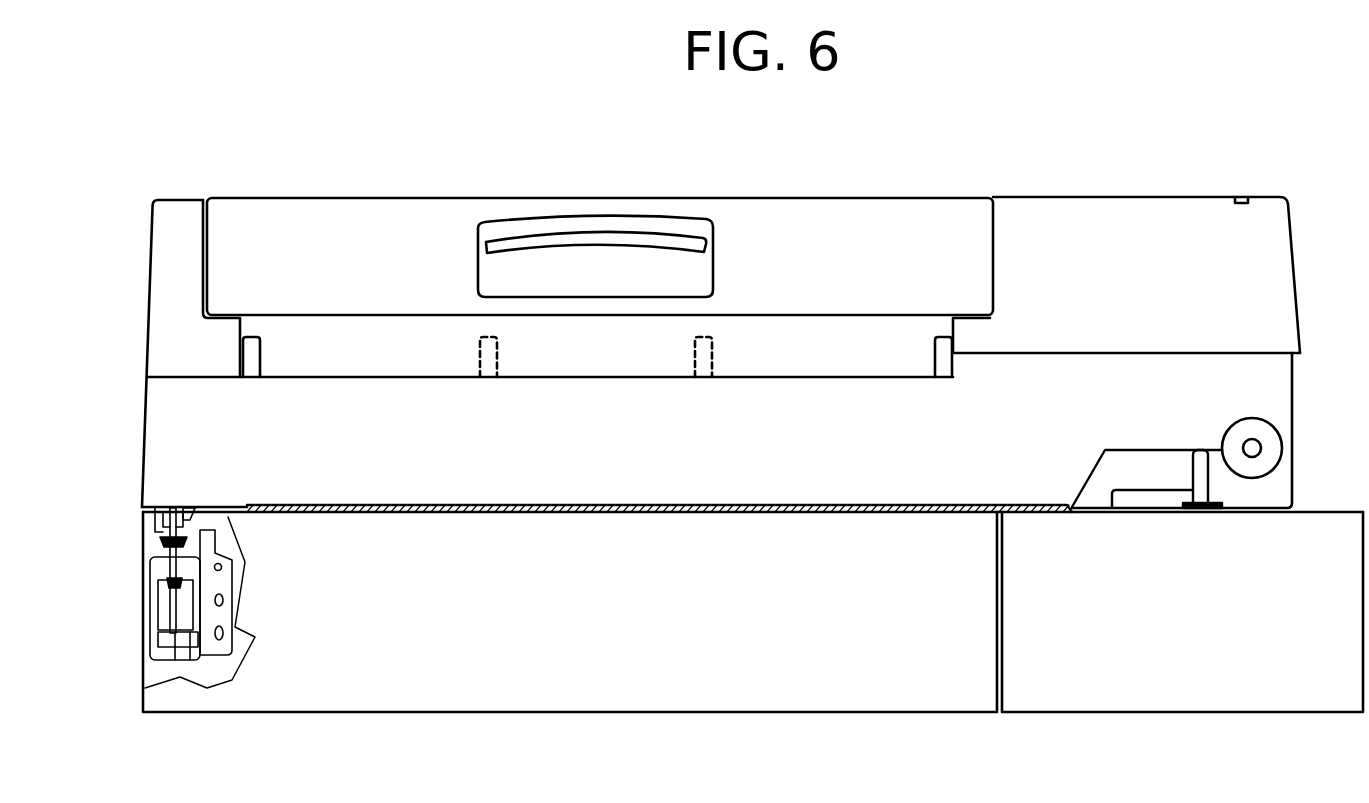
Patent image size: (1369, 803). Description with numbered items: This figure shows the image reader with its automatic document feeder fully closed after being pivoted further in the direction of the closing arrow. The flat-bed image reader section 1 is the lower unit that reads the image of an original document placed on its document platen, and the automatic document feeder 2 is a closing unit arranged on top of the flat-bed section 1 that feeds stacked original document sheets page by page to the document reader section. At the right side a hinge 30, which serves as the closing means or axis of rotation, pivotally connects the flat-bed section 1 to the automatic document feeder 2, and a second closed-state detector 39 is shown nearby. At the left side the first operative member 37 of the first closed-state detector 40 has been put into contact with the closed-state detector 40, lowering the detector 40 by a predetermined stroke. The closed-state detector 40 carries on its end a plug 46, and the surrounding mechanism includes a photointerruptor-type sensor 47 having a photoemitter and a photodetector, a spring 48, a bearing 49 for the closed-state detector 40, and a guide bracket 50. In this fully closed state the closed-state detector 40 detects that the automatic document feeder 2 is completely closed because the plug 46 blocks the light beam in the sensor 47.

The flat-bed image reader section 1 is at (1205, 713).
The automatic document feeder 2 is at (850, 197).
The hinge 30 is at (1280, 435).
The first operative member 37 is at (175, 505).
The second closed-state detector 39 is at (1190, 465).
The first closed-state detector 40 is at (195, 508).
The plug 46 is at (175, 642).
The photointerruptor-type sensor 47 is at (187, 647).
The spring 48 is at (178, 550).
The bearing 49 is at (153, 505).
The guide bracket 50 is at (233, 627).